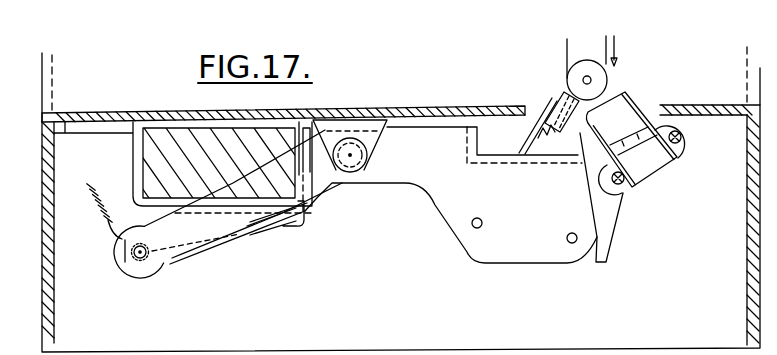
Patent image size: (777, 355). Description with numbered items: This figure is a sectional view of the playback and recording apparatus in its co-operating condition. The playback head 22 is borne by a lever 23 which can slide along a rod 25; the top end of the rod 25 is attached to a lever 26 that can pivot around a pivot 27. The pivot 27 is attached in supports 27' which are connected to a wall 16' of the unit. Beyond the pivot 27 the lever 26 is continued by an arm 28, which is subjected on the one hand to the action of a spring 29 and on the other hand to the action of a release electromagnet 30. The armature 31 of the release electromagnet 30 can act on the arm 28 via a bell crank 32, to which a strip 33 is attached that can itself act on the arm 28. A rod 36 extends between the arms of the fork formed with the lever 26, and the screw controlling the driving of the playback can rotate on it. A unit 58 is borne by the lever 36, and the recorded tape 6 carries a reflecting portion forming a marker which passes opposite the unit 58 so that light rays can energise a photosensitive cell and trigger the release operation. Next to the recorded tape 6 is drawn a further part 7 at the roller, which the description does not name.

The feed roller 6 is at (567, 46).
The roller shaft 7 is at (579, 75).
The support plate 16' is at (283, 88).
The guide block 22 is at (628, 100).
The lever 23 is at (613, 201).
The pin 25 is at (473, 228).
The cam plate 26 is at (438, 207).
The pulley 27 is at (359, 186).
The link 27' is at (266, 141).
The pivoted lever 28 is at (170, 257).
The spring 29 is at (90, 186).
The block 30 is at (163, 140).
The pin 31 is at (298, 120).
The roller 32 is at (306, 204).
The arm 33 is at (263, 223).
The stop pin 36 is at (570, 244).
The pressure pad 58 is at (552, 99).